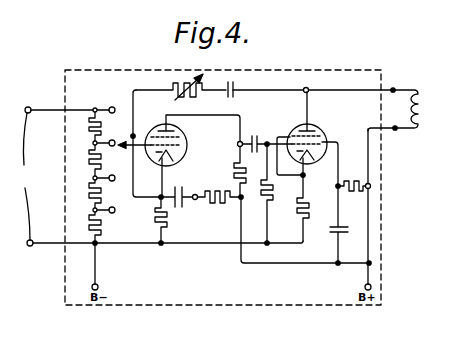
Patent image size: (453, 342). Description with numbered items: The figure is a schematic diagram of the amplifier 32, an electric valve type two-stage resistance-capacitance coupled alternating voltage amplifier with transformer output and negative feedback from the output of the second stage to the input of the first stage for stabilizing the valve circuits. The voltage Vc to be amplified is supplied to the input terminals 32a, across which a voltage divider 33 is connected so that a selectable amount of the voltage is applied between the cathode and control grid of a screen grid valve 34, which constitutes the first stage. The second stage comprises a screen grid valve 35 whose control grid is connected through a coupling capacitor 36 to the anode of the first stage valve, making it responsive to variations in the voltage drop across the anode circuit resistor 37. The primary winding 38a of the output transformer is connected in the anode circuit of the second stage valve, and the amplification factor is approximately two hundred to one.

The amplifier 32 is at (358, 68).
The input terminals 32a is at (26, 176).
The voltage divider 33 is at (97, 160).
The screen grid valve 34 is at (186, 137).
The screen grid valve 35 is at (324, 132).
The coupling capacitor 36 is at (255, 136).
The anode circuit resistor 37 is at (236, 172).
The primary winding 38a is at (397, 100).